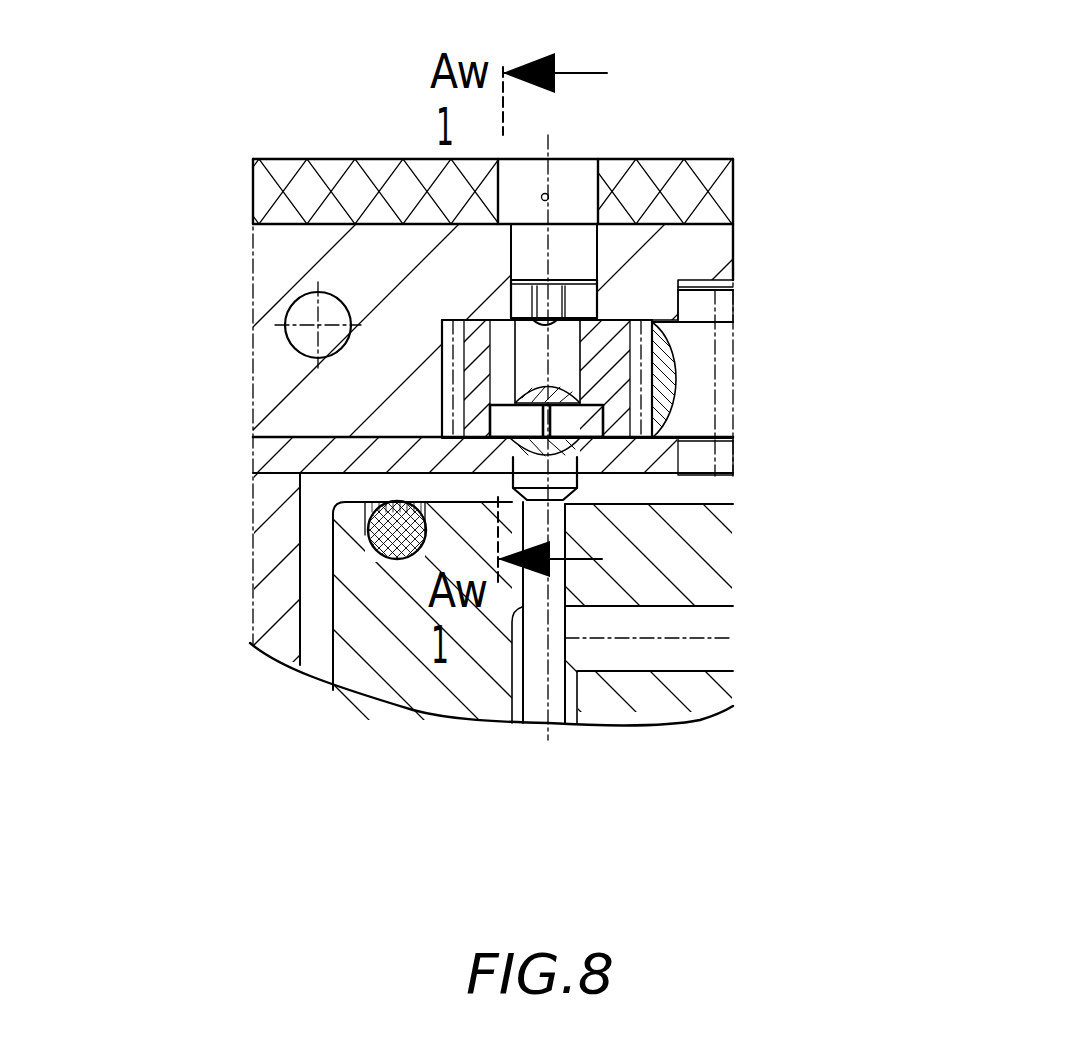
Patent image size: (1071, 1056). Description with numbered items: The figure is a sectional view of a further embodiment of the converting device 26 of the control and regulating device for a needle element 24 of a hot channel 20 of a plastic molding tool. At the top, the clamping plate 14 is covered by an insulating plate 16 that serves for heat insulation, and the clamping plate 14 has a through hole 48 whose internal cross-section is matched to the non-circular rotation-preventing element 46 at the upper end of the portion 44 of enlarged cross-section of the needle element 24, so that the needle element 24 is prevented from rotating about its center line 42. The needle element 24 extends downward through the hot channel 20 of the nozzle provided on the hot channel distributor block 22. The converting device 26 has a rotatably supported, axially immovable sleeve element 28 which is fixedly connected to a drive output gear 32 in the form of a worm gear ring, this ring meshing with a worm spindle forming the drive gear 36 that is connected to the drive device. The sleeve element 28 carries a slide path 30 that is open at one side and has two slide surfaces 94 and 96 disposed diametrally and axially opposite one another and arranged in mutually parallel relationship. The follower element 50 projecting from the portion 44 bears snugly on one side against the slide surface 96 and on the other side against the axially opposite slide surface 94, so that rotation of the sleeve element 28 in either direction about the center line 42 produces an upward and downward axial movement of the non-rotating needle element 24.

The clamping plate 14 is at (273, 260).
The insulating plate 16 is at (300, 188).
The hot channel 20 is at (568, 707).
The hot channel distributor block 22 is at (700, 581).
The needle element 24 is at (537, 700).
The converting device 26 is at (750, 282).
The sleeve element 28 is at (600, 368).
The slide path 30 is at (500, 372).
The drive output gear 32 is at (445, 418).
The drive gear 36 is at (695, 410).
The center line 42 is at (548, 195).
The portion of enlarged cross-section 44 is at (537, 350).
The rotation-preventing element 46 is at (577, 300).
The through hole 48 is at (578, 237).
The follower element 50 is at (505, 478).
The slide surface 94 is at (673, 386).
The slide surface 96 is at (512, 443).